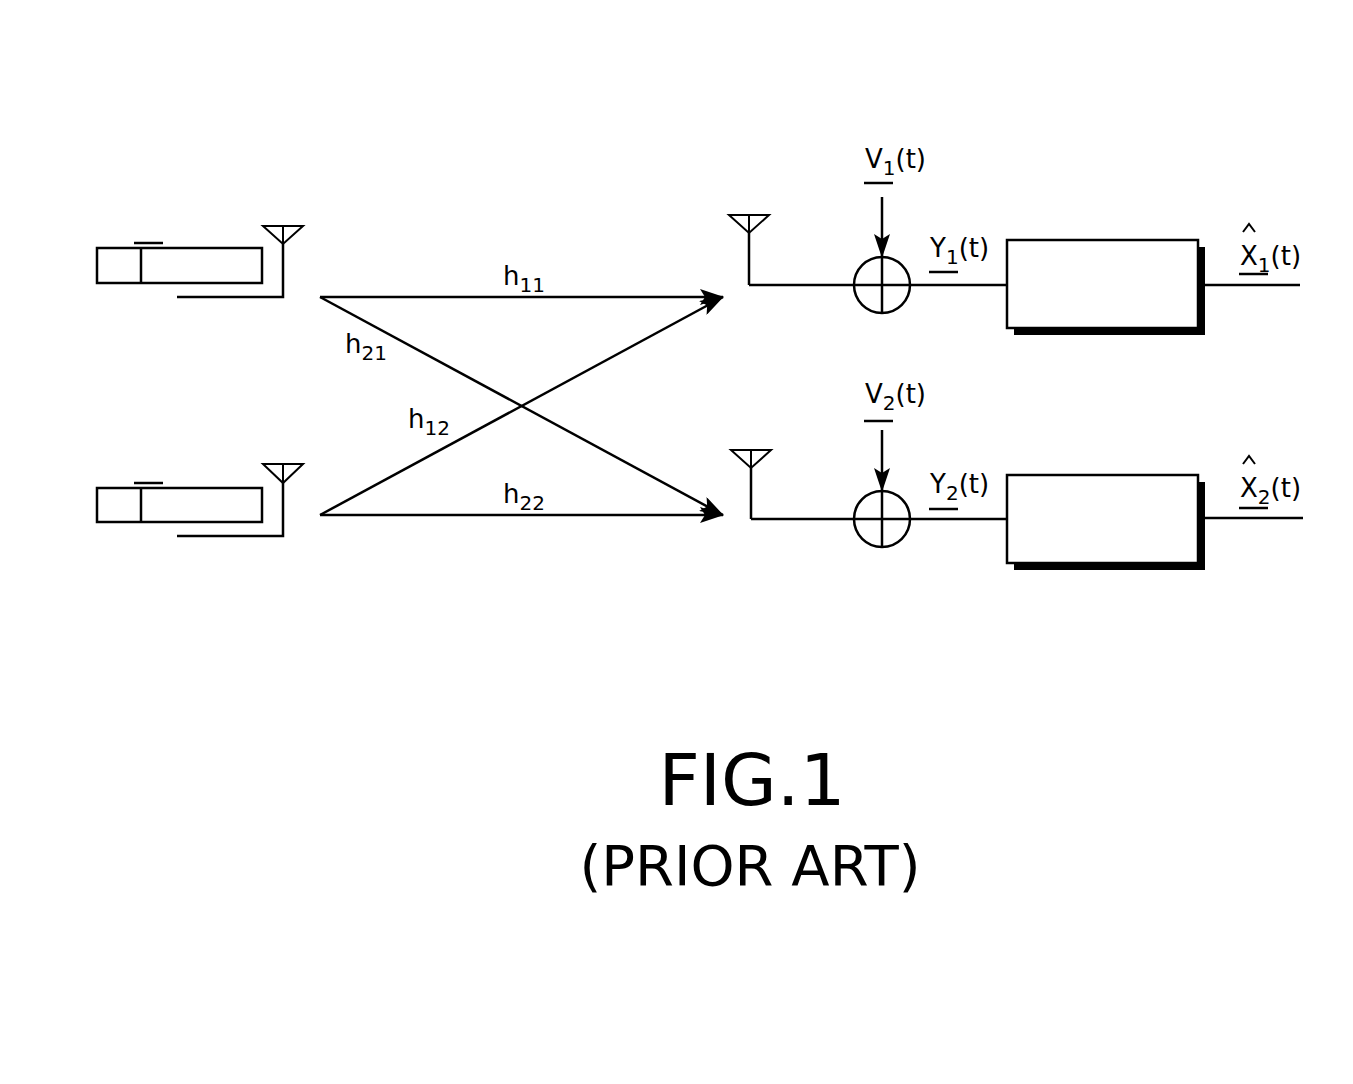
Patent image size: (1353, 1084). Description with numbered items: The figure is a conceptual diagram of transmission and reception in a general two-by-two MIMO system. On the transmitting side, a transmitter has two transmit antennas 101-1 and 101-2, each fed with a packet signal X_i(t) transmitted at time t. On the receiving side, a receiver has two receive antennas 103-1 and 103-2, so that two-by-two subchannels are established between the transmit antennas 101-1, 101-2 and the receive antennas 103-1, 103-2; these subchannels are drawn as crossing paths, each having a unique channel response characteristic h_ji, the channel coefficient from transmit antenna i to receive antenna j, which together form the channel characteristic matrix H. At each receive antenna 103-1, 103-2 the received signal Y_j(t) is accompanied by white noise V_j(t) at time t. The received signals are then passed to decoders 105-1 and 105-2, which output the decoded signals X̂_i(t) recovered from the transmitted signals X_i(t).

The transmit antenna 101-1 is at (266, 226).
The transmit antenna 101-2 is at (266, 464).
The receive antenna 103-1 is at (732, 215).
The receive antenna 103-2 is at (734, 450).
The decoder 105-1 is at (1124, 240).
The decoder 105-2 is at (1124, 475).